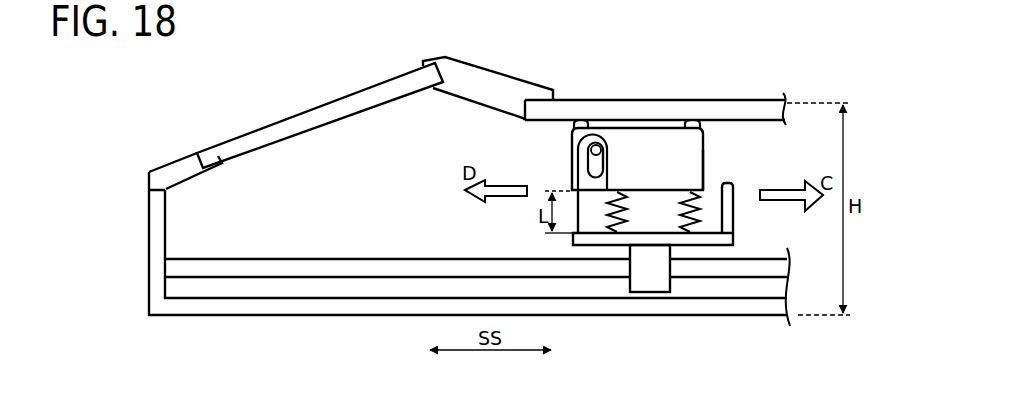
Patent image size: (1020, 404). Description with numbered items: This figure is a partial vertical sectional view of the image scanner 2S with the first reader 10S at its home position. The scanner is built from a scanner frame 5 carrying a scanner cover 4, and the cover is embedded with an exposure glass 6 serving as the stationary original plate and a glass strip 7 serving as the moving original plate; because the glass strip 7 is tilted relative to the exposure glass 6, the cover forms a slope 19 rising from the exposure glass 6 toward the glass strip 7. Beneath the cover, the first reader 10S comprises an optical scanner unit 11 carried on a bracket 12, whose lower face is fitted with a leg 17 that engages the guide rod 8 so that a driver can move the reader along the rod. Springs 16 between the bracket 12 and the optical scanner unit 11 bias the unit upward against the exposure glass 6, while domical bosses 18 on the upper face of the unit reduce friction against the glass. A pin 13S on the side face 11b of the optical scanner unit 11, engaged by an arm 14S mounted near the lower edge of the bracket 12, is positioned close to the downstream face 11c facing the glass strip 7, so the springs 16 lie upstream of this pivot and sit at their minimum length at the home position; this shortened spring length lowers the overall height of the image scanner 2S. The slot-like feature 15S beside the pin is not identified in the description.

The scanner cover 4 is at (180, 166).
The scanner frame 5 is at (150, 235).
The exposure glass 6 is at (752, 100).
The glass strip 7 is at (308, 118).
The guide rod 8 is at (378, 262).
The optical scanner unit 11 is at (709, 139).
The side face 11b is at (704, 167).
The downstream face 11c is at (572, 127).
The bracket 12 is at (734, 222).
The pin 13S is at (595, 145).
The arm 14S is at (604, 163).
The hole 15S is at (587, 160).
The spring 16 is at (621, 208).
The leg 17 is at (652, 286).
The domical boss 18 is at (691, 120).
The slope 19 is at (490, 78).
The image scanner 2S is at (600, 37).
The first reader 10S is at (761, 161).